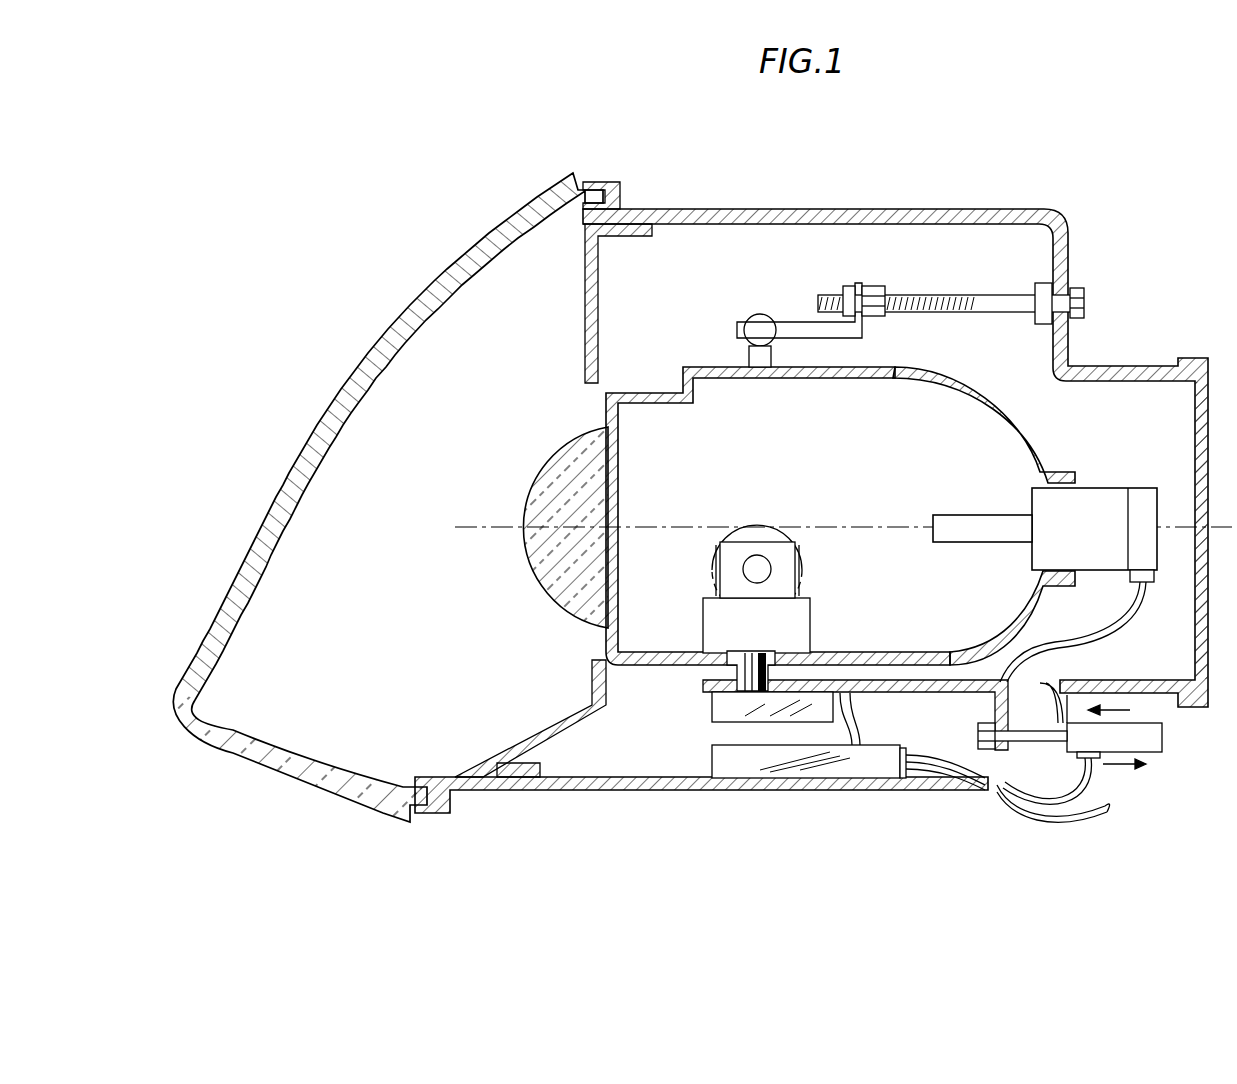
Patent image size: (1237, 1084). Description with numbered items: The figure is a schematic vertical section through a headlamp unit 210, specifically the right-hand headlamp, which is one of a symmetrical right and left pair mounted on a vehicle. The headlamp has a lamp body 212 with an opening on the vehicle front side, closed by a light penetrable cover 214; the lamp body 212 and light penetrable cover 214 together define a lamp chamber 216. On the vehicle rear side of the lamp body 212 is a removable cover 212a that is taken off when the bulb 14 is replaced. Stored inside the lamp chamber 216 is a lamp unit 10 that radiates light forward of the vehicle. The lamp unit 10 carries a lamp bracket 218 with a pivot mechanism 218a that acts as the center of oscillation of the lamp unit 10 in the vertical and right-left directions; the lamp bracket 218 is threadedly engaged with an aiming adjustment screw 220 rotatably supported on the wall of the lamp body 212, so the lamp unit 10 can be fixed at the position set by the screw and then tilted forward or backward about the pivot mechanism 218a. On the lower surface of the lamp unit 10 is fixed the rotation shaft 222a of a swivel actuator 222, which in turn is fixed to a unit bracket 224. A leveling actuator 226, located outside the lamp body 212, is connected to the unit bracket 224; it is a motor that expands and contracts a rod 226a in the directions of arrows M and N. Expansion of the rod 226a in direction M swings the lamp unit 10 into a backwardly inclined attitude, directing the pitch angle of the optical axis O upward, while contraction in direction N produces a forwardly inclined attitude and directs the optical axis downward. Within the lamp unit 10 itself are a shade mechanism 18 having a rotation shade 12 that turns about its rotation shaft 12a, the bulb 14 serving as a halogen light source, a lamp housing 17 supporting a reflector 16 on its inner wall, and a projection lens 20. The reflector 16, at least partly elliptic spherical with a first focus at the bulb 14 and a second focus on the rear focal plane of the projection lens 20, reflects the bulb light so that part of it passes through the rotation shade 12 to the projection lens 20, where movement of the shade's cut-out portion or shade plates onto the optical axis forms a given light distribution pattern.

The lamp unit 10 is at (663, 392).
The rotation shade 12 is at (772, 534).
The rotation shaft 12a is at (760, 570).
The bulb 14 is at (975, 520).
The reflector 16 is at (902, 381).
The lamp housing 17 is at (987, 398).
The shade mechanism 18 is at (756, 522).
The projection lens 20 is at (530, 496).
The headlamp unit 210 is at (950, 209).
The lamp body 212 is at (787, 208).
The removable cover 212a is at (1193, 357).
The light penetrable cover 214 is at (422, 297).
The lamp chamber 216 is at (500, 339).
The lamp bracket 218 is at (806, 320).
The pivot mechanism 218a is at (748, 340).
The aiming adjustment screw 220 is at (995, 300).
The swivel actuator 222 is at (722, 708).
The rotation shaft 222a is at (733, 673).
The unit bracket 224 is at (890, 693).
The leveling actuator 226 is at (1152, 738).
The rod 226a is at (1031, 736).